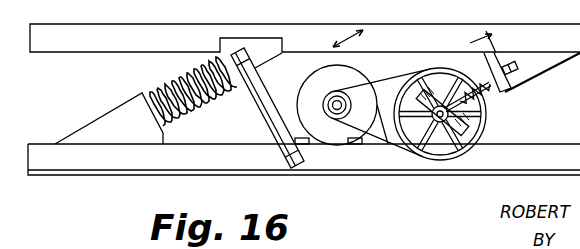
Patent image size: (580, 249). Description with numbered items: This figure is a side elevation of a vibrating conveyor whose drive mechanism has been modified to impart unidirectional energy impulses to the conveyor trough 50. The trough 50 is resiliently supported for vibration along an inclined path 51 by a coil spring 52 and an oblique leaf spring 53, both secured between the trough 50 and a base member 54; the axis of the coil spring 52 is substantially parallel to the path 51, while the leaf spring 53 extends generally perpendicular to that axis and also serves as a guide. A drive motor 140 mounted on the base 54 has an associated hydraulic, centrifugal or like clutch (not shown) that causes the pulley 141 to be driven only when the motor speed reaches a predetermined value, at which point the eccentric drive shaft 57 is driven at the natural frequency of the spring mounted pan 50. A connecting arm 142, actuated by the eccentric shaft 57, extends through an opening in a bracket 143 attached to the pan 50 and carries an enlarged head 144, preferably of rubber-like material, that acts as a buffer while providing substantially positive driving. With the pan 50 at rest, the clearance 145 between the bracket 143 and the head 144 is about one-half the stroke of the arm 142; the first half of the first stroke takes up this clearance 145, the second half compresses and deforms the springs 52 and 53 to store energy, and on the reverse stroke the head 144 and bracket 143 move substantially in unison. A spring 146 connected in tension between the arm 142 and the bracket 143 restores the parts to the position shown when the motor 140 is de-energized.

The conveyor trough 50 is at (305, 46).
The inclined path 51 is at (340, 40).
The coil spring 52 is at (165, 81).
The leaf spring 53 is at (262, 111).
The base member 54 is at (120, 165).
The eccentric drive shaft 57 is at (438, 122).
The drive motor 140 is at (313, 85).
The pulley 141 is at (343, 91).
The connecting arm 142 is at (488, 82).
The bracket 143 is at (523, 73).
The enlarged head 144 is at (548, 74).
The clearance 145 is at (493, 35).
The spring 146 is at (487, 99).